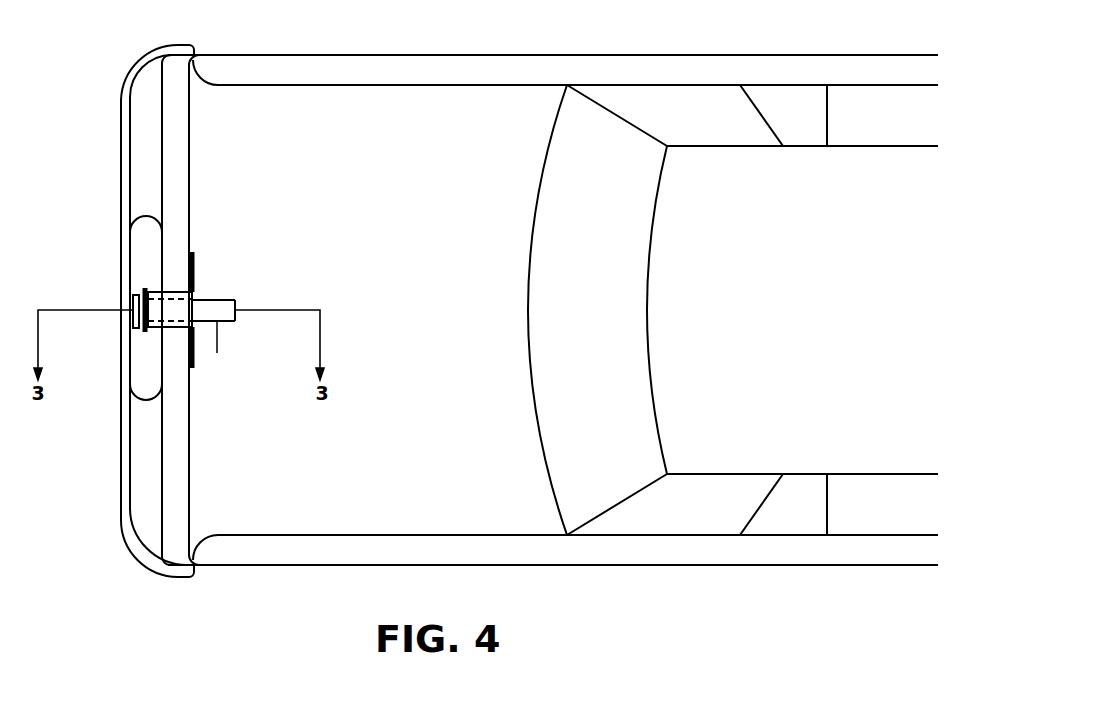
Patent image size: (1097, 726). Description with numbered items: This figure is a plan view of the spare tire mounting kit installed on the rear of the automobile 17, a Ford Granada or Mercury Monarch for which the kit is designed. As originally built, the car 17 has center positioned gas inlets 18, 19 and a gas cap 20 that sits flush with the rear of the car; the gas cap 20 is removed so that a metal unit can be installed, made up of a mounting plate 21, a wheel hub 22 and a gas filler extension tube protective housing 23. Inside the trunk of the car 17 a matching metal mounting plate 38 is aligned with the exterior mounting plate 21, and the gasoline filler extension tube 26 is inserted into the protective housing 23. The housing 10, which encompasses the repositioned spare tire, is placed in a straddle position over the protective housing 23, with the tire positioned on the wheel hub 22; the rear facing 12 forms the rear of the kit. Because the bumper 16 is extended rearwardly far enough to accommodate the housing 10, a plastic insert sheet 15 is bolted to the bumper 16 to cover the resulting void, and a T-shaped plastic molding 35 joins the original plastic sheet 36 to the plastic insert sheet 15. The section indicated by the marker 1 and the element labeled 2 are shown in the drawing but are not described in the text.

The reference line 1 is at (214, 347).
The pocket wall 2 is at (133, 262).
The housing 10 is at (142, 232).
The rear facing 12 is at (130, 343).
The plastic insert sheet 15 is at (143, 468).
The bumper 16 is at (127, 120).
The automobile 17 is at (762, 266).
The gas inlet 18 is at (213, 310).
The gas inlet 19 is at (230, 322).
The gas cap 20 is at (133, 325).
The mounting plate 21 is at (192, 268).
The wheel hub 22 is at (142, 289).
The gas filler extension tube protective housing 23 is at (155, 329).
The gasoline filler extension tube 26 is at (175, 308).
The T-shaped plastic molding 35 is at (162, 102).
The original plastic sheet 36 is at (173, 538).
The matching metal mounting plate 38 is at (194, 262).